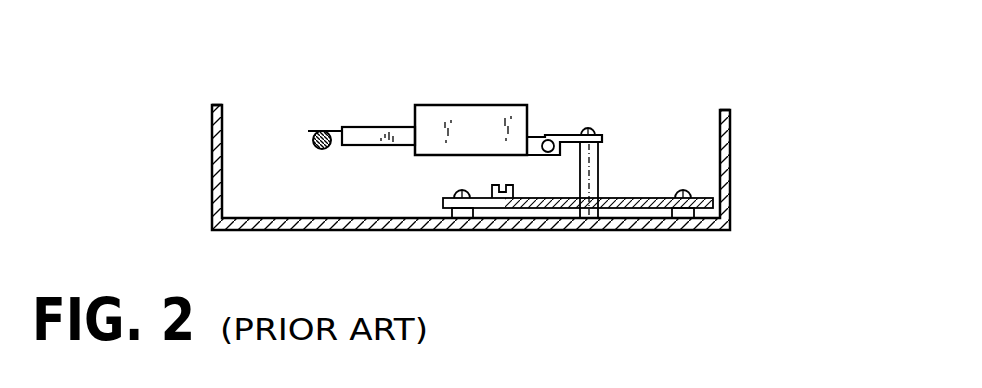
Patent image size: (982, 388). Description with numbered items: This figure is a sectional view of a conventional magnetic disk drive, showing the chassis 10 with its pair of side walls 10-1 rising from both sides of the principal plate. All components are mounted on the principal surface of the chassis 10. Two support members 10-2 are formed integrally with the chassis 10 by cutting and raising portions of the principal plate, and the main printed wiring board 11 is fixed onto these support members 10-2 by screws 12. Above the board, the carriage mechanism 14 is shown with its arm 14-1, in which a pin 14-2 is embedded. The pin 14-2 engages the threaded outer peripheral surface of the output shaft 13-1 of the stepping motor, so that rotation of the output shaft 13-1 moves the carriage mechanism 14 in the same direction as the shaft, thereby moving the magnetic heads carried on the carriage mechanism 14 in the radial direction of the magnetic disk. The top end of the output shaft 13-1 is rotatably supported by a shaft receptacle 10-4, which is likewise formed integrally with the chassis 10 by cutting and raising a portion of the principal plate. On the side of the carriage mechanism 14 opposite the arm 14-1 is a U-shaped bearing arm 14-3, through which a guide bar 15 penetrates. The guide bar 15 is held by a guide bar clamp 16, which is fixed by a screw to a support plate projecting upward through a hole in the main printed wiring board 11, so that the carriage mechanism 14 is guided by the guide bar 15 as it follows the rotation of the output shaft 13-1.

The chassis 10 is at (302, 243).
The side wall 10-1 is at (212, 173).
The support member 10-2 is at (462, 214).
The shaft receptacle 10-4 is at (598, 158).
The main printed wiring board 11 is at (608, 210).
The screw 12 is at (457, 192).
The output shaft 13-1 is at (322, 150).
The carriage mechanism 14 is at (485, 105).
The arm 14-1 is at (385, 138).
The pin 14-2 is at (320, 131).
The bearing arm 14-3 is at (546, 136).
The guide bar 15 is at (552, 156).
The guide bar clamp 16 is at (589, 128).